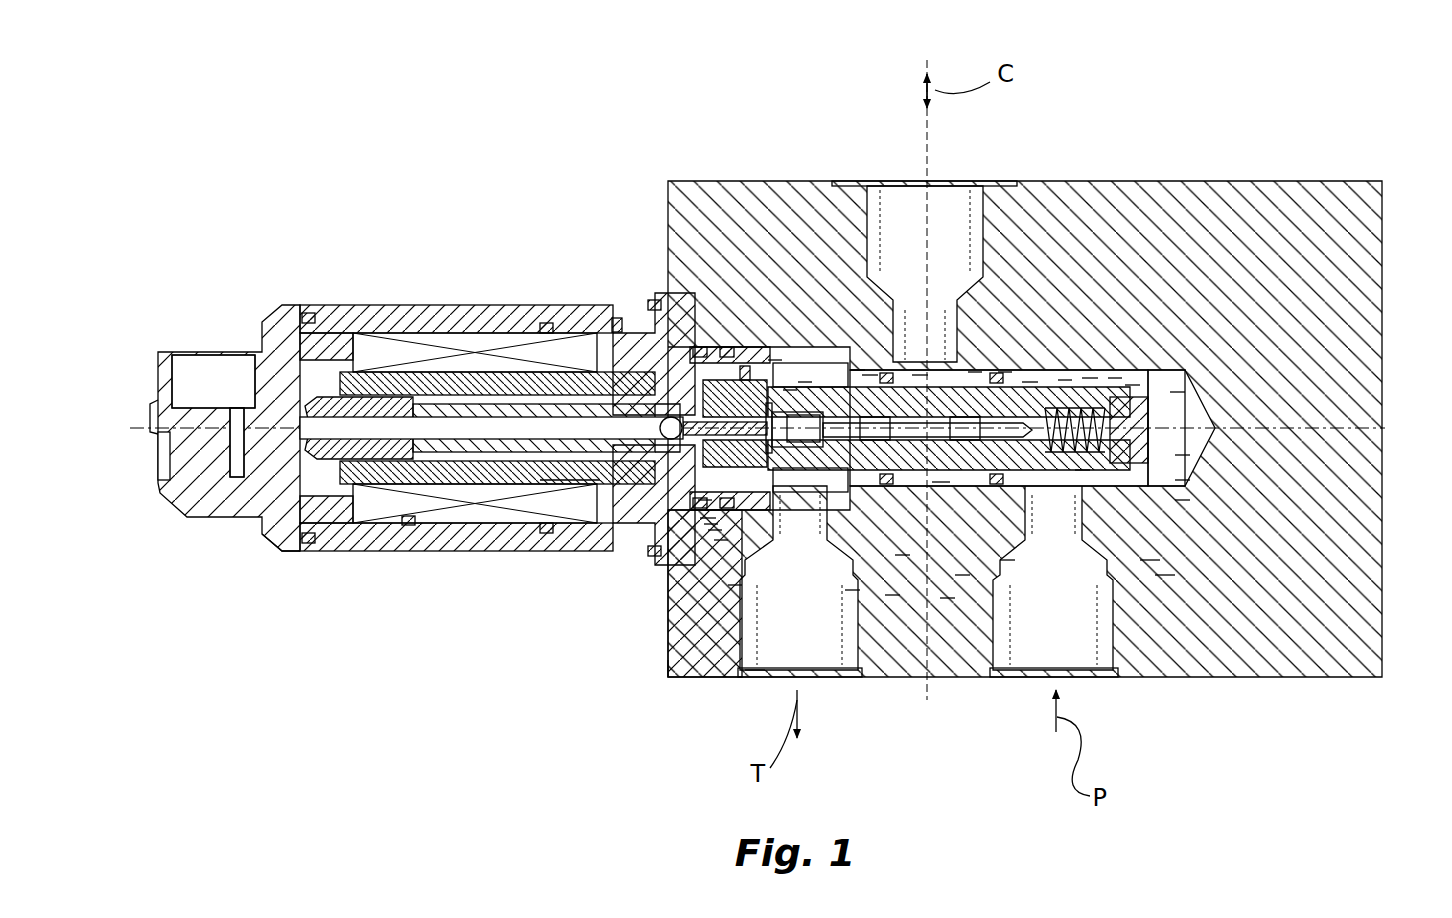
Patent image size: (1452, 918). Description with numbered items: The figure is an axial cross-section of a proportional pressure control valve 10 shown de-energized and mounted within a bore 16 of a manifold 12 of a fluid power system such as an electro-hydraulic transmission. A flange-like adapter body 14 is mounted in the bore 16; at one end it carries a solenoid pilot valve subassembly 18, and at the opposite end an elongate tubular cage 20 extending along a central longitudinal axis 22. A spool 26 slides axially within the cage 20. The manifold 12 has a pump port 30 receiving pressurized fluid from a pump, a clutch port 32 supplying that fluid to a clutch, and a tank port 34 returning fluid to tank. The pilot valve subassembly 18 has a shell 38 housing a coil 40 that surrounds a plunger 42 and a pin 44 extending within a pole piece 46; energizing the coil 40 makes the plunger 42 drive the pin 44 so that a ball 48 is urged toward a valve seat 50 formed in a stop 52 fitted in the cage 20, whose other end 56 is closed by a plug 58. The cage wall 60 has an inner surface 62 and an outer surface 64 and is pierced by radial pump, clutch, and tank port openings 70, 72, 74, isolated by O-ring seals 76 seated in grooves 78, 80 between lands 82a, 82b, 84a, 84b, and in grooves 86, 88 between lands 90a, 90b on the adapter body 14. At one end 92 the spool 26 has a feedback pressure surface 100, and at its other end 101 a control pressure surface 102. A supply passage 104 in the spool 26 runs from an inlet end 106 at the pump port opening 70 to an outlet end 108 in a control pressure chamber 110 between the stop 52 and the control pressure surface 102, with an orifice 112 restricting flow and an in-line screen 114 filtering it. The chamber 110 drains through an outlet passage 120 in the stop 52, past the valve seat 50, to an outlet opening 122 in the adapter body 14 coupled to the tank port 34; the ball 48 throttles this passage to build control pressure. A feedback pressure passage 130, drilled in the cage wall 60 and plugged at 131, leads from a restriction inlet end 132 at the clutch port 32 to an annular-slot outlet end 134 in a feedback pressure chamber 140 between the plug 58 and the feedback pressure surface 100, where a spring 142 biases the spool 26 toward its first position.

The proportional pressure control valve 10 is at (512, 198).
The manifold 12 is at (1340, 183).
The adapter body 14 is at (660, 300).
The bore 16 is at (1180, 426).
The solenoid pilot valve subassembly 18 is at (252, 283).
The cage 20 is at (1180, 480).
The central longitudinal axis 22 is at (222, 478).
The spool 26 is at (1030, 380).
The pump port 30 is at (1034, 631).
The clutch port 32 is at (932, 263).
The tank port 34 is at (799, 635).
The shell 38 is at (290, 552).
The coil 40 is at (365, 335).
The plunger 42 is at (420, 340).
The pin 44 is at (345, 460).
The pole piece 46 is at (470, 375).
The ball 48 is at (455, 452).
The valve seat 50 is at (570, 470).
The stop 52 is at (612, 322).
The cage end 56 is at (1180, 500).
The plug 58 is at (1180, 383).
The cage wall 60 is at (795, 497).
The inner surface 62 is at (975, 372).
The outer surface 64 is at (1115, 378).
The pump port opening 70 is at (1082, 475).
The clutch port opening 72 is at (940, 484).
The tank port opening 74 is at (756, 678).
The seals 76 is at (307, 312).
The groove 78 is at (962, 580).
The groove 80 is at (890, 598).
The land 82a is at (1008, 565).
The land 82b is at (945, 600).
The land 84a is at (900, 560).
The land 84b is at (852, 595).
The groove 86 is at (715, 532).
The groove 88 is at (708, 520).
The land 90a is at (720, 545).
The land 90b is at (712, 524).
The spool end 92 is at (1065, 380).
The feedback pressure surface 100 is at (1150, 562).
The spool end 101 is at (668, 680).
The control pressure surface 102 is at (775, 360).
The supply passage 104 is at (920, 375).
The inlet end 106 is at (1005, 372).
The outlet end 108 is at (805, 380).
The control pressure chamber 110 is at (790, 390).
The orifice 112 is at (700, 505).
The in-line screen 114 is at (870, 375).
The outlet passage 120 is at (545, 482).
The outlet opening 122 is at (735, 590).
The feedback pressure passage 130 is at (1090, 378).
The plugged drill opening 131 is at (1180, 392).
The inlet end 132 is at (856, 362).
The outlet end 134 is at (1130, 385).
The feedback pressure chamber 140 is at (1165, 580).
The spring 142 is at (1180, 455).